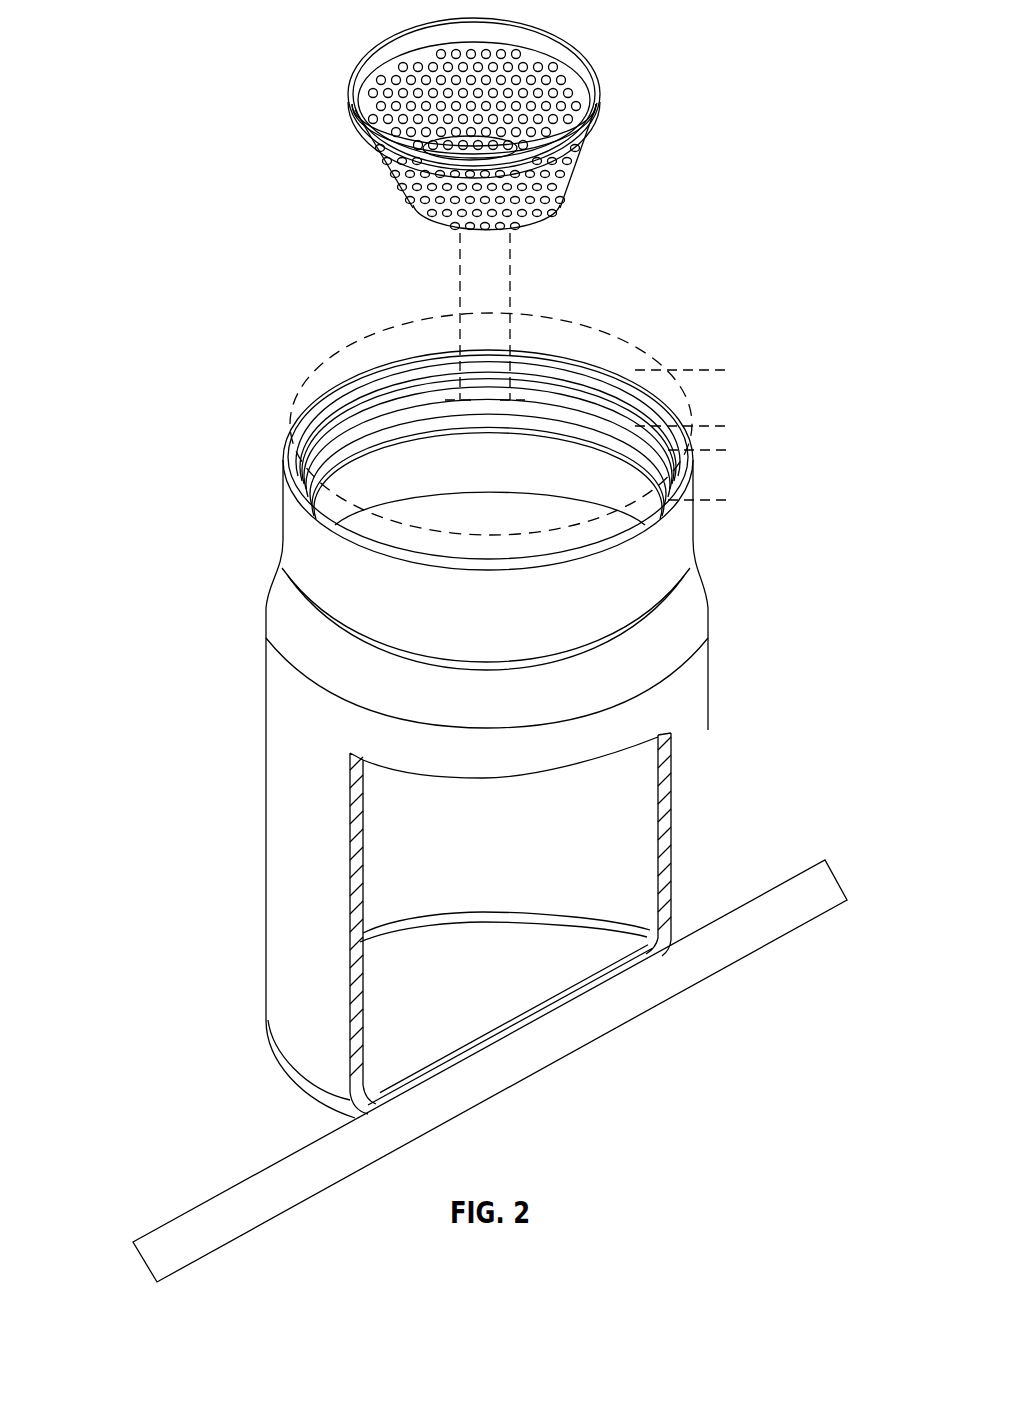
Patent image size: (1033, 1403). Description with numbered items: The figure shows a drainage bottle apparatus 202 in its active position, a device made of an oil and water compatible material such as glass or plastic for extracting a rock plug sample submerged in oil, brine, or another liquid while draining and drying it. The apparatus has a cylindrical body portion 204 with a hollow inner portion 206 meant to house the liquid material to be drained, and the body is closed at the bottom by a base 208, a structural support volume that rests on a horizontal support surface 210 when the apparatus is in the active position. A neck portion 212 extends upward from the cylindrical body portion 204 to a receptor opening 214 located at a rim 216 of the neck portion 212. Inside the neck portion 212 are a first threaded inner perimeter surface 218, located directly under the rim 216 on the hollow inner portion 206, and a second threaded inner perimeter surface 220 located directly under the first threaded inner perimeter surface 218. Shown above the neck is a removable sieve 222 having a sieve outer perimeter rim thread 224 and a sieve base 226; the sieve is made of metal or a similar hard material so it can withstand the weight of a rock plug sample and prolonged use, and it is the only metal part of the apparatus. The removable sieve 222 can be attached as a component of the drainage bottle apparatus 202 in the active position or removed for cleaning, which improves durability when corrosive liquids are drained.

The drainage bottle apparatus 202 is at (123, 3).
The cylindrical body portion 204 is at (203, 612).
The hollow inner portion 206 is at (582, 846).
The base 208 is at (340, 1098).
The horizontal support surface 210 is at (752, 900).
The neck portion 212 is at (203, 368).
The receptor opening 214 is at (433, 320).
The rim 216 is at (377, 371).
The first threaded inner perimeter surface 218 is at (727, 370).
The second threaded inner perimeter surface 220 is at (727, 450).
The removable sieve 222 is at (632, 20).
The sieve outer perimeter rim thread 224 is at (348, 93).
The sieve base 226 is at (486, 234).